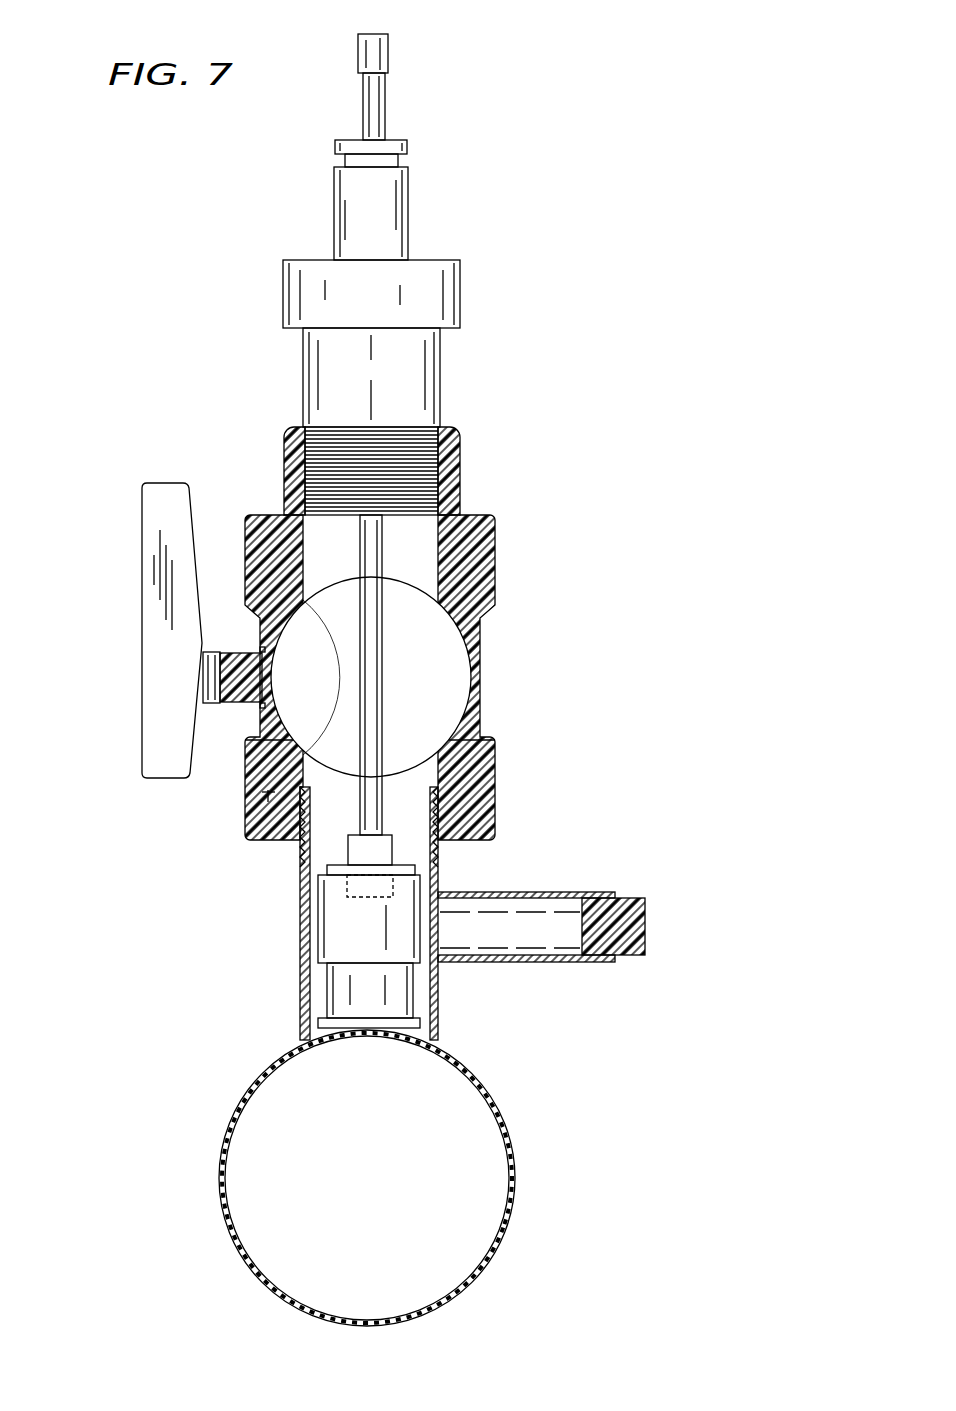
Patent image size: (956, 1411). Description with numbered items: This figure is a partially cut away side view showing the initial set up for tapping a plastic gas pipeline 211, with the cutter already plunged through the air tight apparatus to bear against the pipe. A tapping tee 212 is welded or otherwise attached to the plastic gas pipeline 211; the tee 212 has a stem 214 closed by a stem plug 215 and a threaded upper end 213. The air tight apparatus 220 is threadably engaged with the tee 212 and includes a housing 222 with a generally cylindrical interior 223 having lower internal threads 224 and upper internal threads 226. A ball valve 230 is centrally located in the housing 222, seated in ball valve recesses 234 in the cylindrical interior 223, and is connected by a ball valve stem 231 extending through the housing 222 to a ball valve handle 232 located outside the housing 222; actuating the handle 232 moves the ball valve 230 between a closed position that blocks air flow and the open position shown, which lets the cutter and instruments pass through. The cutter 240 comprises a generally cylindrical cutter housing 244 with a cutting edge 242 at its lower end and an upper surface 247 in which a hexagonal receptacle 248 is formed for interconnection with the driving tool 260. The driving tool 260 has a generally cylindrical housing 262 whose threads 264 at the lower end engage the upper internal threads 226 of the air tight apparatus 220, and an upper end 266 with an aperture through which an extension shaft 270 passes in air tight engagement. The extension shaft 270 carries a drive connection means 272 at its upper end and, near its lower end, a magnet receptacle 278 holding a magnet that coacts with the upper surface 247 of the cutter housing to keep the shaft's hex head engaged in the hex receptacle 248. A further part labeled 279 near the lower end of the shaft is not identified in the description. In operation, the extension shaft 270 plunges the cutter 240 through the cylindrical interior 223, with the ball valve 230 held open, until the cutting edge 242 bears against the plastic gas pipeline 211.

The drive connection means 272 is at (388, 36).
The extension shaft 270 is at (386, 99).
The upper end 266 is at (408, 148).
The driving tool 260 is at (478, 311).
The housing 262 is at (441, 358).
The threads 264 is at (438, 425).
The upper internal threads 226 is at (440, 502).
The air tight apparatus 220 is at (545, 550).
The ball valve 230 is at (328, 587).
The cylindrical interior 223 is at (447, 573).
The ball valve recesses 234 is at (470, 648).
The ball valve stem 231 is at (237, 655).
The ball valve handle 232 is at (155, 753).
The housing 222 is at (488, 770).
The lower internal threads 224 is at (268, 797).
The Stem lower end 279 is at (392, 845).
The magnet receptacle 278 is at (420, 872).
The threaded upper end 213 is at (300, 838).
The hexagonal receptacle 248 is at (438, 888).
The upper surface 247 is at (310, 868).
The stem 214 is at (590, 892).
The cutter housing 244 is at (318, 946).
The stem plug 215 is at (640, 958).
The tapping tee 212 is at (285, 984).
The cutter 240 is at (445, 986).
The cutting edge 242 is at (300, 1040).
The plastic gas pipeline 211 is at (516, 1150).